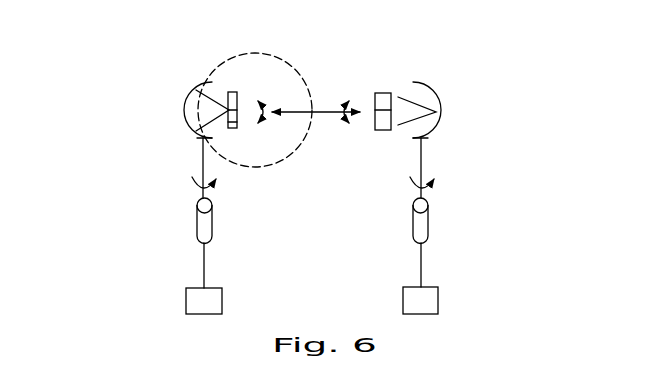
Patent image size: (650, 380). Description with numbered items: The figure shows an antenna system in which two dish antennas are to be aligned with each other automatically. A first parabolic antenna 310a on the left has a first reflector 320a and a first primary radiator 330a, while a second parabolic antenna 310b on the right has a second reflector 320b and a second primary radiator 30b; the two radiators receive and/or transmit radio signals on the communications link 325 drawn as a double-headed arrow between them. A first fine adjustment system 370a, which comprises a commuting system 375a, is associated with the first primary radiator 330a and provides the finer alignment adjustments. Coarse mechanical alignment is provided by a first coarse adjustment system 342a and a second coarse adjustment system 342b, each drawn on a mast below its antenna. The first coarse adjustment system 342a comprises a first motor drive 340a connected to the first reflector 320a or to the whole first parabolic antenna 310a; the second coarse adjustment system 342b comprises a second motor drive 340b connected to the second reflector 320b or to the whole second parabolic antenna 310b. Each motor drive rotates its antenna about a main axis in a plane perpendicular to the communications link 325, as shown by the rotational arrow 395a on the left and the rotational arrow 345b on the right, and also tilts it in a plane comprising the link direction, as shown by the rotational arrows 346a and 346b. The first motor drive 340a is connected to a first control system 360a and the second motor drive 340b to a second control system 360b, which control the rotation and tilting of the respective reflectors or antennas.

The first parabolic antenna 310a is at (187, 80).
The second parabolic antenna 310b is at (425, 75).
The first reflector 320a is at (182, 105).
The second reflector 320b is at (441, 105).
The first primary radiator 330a is at (231, 92).
The second feed / transceiver unit 30b is at (383, 93).
The communications link 325 is at (316, 102).
The rotational arrow 346a is at (268, 117).
The rotational arrow 346b is at (337, 99).
The first fine adjustment system 370a is at (237, 117).
The commuting system 375a is at (232, 128).
The rotation of first antenna 395a is at (178, 188).
The rotational arrow 345b is at (449, 183).
The first coarse adjustment system 342a is at (130, 193).
The second coarse adjustment system 342b is at (499, 200).
The first motor drive 340a is at (197, 222).
The second motor drive 340b is at (428, 222).
The first control system 360a is at (186, 300).
The second control system 360b is at (438, 300).